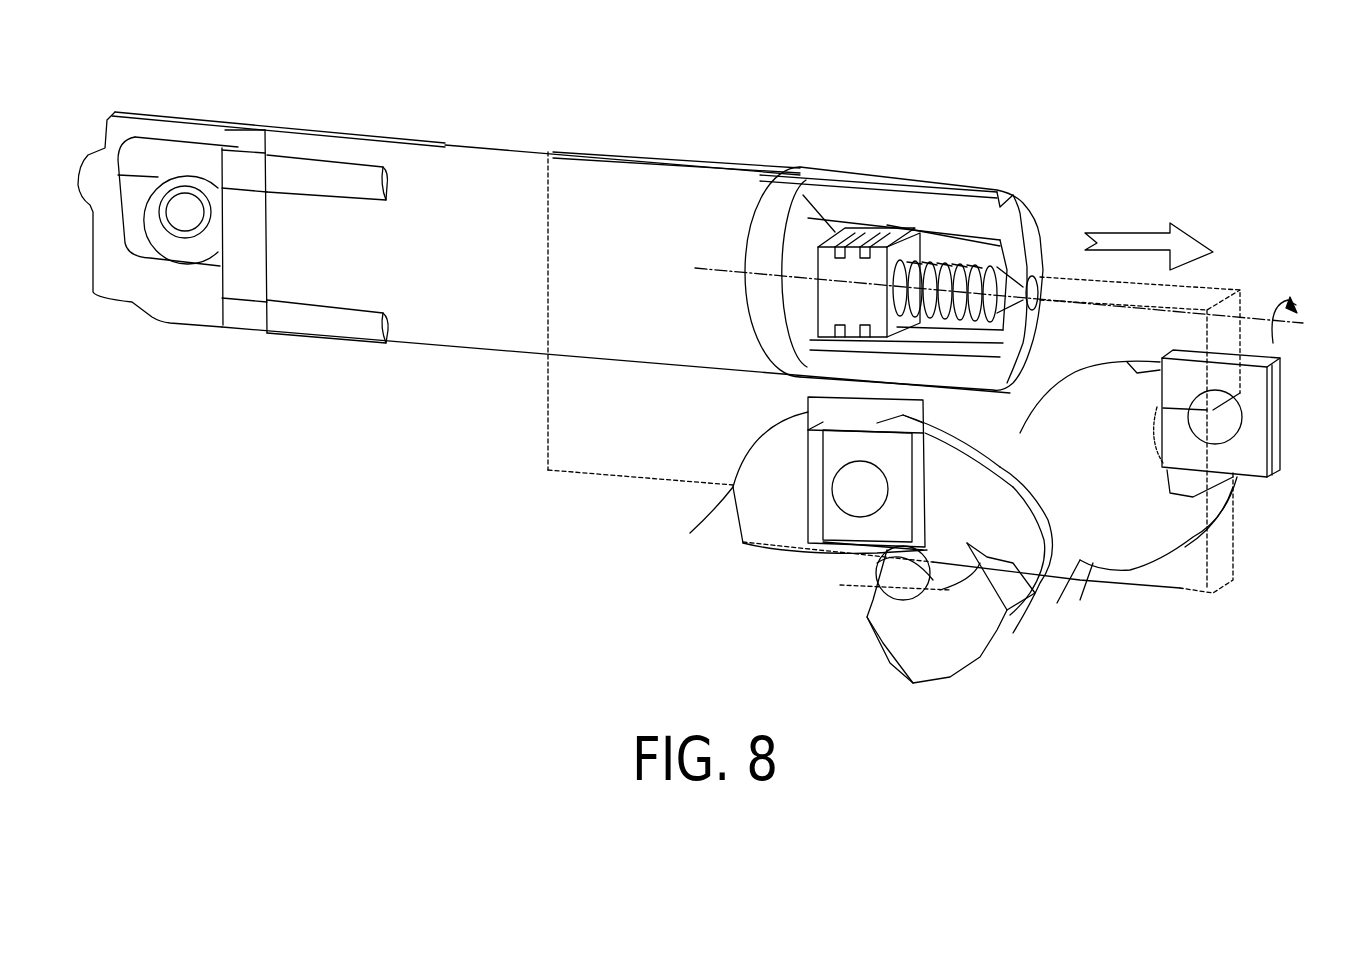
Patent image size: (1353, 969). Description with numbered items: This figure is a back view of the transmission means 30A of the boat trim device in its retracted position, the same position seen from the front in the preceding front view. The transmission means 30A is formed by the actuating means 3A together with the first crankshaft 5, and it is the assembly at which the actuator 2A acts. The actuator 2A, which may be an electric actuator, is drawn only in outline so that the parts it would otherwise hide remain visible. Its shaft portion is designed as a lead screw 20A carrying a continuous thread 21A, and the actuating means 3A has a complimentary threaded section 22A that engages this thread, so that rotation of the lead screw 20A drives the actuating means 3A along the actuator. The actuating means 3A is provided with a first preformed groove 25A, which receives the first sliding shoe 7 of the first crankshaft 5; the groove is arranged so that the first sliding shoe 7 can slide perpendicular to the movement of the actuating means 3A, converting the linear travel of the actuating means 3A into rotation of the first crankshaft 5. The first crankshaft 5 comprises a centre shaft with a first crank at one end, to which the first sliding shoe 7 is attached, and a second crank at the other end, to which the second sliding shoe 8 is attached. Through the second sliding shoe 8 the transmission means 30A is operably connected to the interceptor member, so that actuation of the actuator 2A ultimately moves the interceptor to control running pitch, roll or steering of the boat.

The actuator 2A is at (493, 144).
The actuating means 3A is at (608, 480).
The lead screw 20A is at (952, 282).
The continuous thread 21A is at (937, 278).
The complimentary threaded section 22A is at (852, 250).
The first preformed groove 25A is at (737, 485).
The transmission means 30A is at (600, 608).
The first crankshaft 5 is at (1111, 495).
The first sliding shoe 7 is at (837, 450).
The second sliding shoe 8 is at (1250, 438).